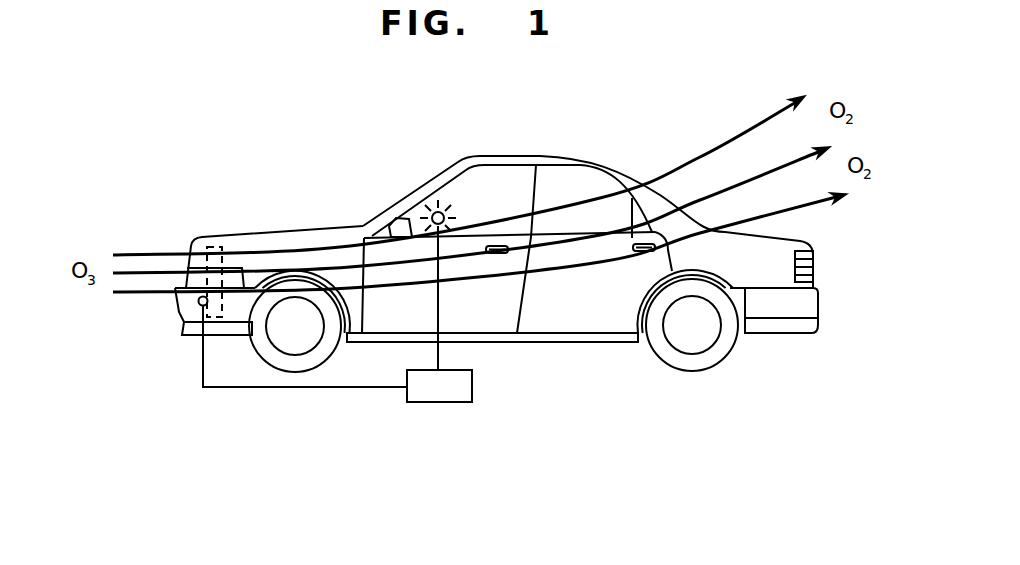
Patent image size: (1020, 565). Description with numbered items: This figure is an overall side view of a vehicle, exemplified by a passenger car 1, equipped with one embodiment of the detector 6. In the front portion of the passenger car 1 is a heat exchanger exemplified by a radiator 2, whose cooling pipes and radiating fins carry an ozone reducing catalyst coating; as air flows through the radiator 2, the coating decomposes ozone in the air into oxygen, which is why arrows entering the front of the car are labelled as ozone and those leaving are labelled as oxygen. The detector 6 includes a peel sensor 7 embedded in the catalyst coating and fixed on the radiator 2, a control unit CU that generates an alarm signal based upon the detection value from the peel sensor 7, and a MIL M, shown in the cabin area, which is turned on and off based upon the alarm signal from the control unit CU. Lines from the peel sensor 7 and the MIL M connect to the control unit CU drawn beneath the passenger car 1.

The passenger car 1 is at (603, 140).
The radiator 2 is at (232, 245).
The detector 6 is at (363, 395).
The peel sensor 7 is at (198, 302).
The MIL M is at (443, 201).